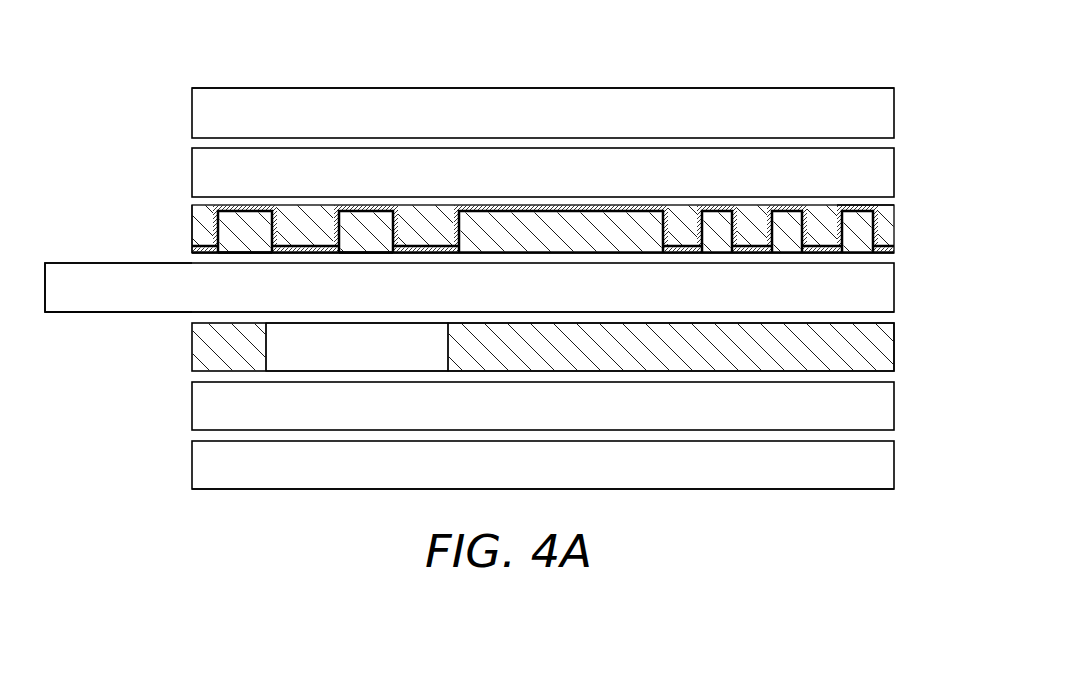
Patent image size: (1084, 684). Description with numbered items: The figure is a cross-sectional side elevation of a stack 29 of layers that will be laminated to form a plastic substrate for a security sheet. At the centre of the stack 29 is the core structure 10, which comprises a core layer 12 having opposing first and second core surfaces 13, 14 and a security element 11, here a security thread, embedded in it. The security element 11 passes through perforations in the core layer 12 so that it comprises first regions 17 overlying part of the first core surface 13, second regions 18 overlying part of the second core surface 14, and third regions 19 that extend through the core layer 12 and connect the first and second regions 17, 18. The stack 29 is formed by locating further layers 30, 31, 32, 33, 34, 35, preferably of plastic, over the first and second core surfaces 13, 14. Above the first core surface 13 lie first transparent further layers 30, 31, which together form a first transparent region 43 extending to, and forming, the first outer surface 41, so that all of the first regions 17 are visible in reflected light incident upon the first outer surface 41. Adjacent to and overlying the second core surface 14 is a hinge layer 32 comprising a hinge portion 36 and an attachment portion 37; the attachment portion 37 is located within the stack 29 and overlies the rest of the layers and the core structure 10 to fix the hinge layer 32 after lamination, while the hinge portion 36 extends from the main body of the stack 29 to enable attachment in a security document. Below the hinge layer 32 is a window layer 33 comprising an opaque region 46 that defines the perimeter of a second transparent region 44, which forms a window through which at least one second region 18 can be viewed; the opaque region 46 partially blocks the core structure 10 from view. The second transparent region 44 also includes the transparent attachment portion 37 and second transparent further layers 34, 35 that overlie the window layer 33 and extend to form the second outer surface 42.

The stack 29 is at (886, 61).
The first transparent further layer 30 is at (577, 85).
The first transparent further layer 31 is at (894, 172).
The core structure 10 is at (545, 231).
The security element 11 is at (894, 234).
The core layer 12 is at (192, 222).
The first core surface 13 is at (885, 203).
The second core surface 14 is at (862, 254).
The first region 17 is at (243, 207).
The second region 18 is at (308, 254).
The third region 19 is at (271, 233).
The hinge layer 32 is at (504, 283).
The window layer 33 is at (577, 374).
The second transparent further layer 34 is at (894, 400).
The second transparent further layer 35 is at (577, 495).
The hinge portion 36 is at (83, 277).
The attachment portion 37 is at (212, 298).
The first outer surface 41 is at (786, 88).
The second outer surface 42 is at (788, 489).
The first transparent region 43 is at (541, 102).
The second transparent region 44 is at (358, 357).
The opaque region 46 is at (592, 357).